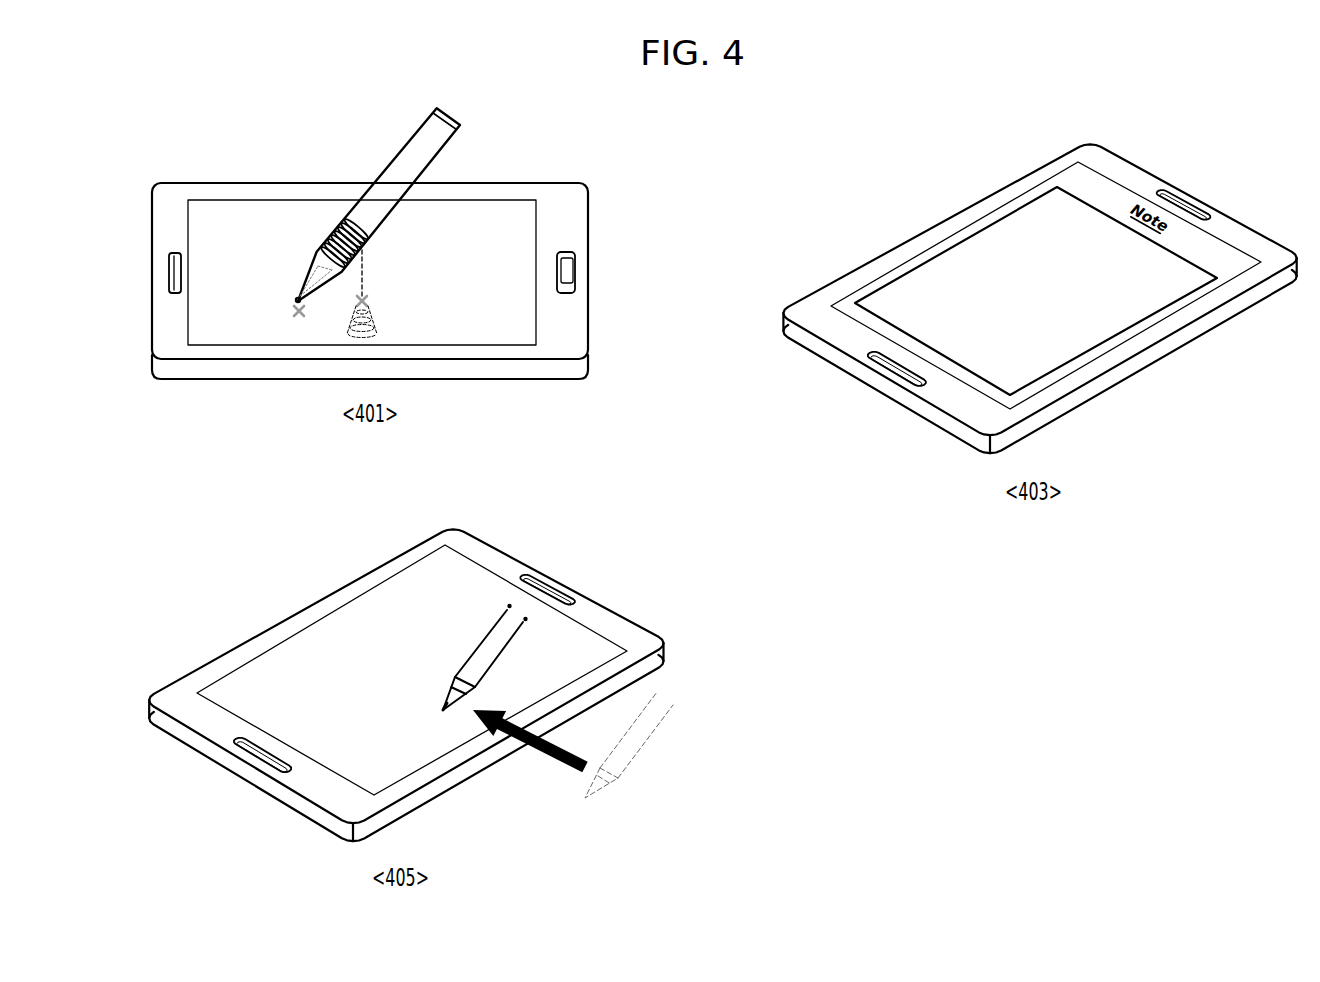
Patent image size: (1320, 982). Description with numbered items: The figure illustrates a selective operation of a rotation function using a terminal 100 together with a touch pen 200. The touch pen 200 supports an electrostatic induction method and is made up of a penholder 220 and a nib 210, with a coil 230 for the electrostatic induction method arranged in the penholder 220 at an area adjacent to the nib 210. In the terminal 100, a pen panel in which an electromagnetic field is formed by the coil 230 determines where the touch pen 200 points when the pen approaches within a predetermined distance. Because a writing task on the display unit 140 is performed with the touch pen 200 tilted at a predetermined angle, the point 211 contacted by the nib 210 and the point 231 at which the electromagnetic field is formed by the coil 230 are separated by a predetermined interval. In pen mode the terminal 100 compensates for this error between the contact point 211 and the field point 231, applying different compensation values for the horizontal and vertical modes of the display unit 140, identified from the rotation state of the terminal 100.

The terminal 100 is at (224, 180).
The display unit 140 is at (507, 207).
The touch pen 200 is at (472, 650).
The nib 210 is at (288, 290).
The contact point 211 is at (290, 313).
The penholder 220 is at (330, 217).
The coil 230 is at (357, 217).
The point at which electromagnetic field is formed 231 is at (306, 310).